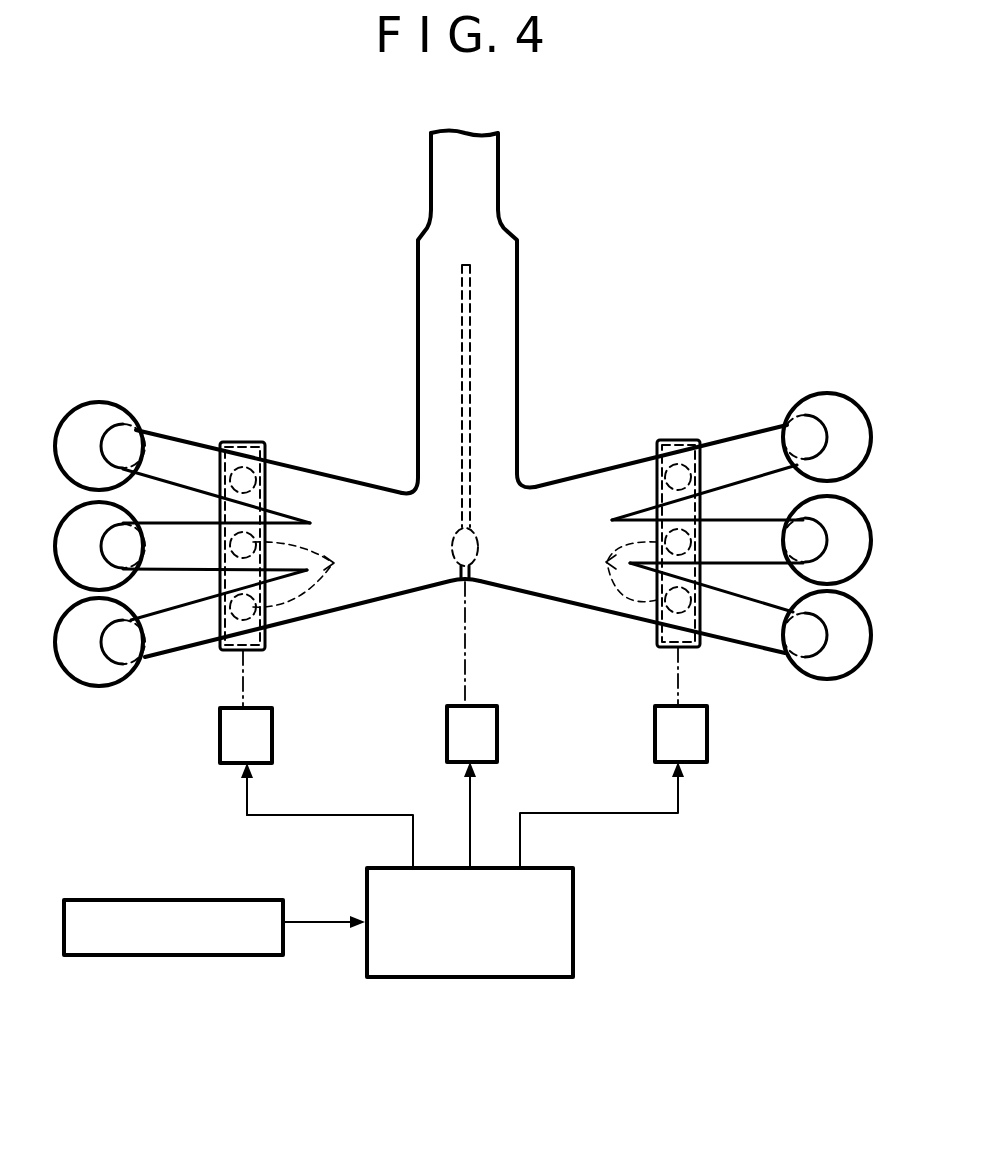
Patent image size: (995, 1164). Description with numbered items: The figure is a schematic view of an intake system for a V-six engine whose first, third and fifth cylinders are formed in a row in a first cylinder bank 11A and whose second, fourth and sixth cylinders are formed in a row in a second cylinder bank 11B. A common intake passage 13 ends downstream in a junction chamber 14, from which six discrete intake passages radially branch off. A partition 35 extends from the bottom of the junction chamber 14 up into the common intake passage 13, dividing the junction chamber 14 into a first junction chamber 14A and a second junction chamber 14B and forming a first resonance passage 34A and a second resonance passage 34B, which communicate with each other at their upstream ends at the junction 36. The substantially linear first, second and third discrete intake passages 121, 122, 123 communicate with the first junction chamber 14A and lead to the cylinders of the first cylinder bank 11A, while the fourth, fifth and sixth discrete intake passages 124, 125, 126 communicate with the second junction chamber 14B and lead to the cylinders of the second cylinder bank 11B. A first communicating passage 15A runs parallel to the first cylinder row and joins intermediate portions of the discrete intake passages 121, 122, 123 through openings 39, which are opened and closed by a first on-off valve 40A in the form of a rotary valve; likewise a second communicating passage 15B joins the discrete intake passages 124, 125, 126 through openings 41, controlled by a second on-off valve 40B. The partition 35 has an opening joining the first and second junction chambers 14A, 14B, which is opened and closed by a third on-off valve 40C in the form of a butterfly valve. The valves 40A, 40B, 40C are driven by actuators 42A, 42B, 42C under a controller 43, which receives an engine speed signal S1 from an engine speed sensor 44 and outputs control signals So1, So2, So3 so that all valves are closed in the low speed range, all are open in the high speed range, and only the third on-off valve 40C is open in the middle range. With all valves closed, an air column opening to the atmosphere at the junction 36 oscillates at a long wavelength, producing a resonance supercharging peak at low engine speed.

The common intake passage 13 is at (512, 208).
The junction of the first and second resonance passages 36 is at (474, 250).
The partition 35 is at (472, 334).
The first resonance passage 34A is at (436, 401).
The second resonance passage 34B is at (504, 393).
The junction chamber 14 is at (452, 478).
The first junction chamber 14A is at (420, 553).
The second junction chamber 14B is at (542, 560).
The third on-off valve 40C is at (472, 545).
The first cylinder bank 11A is at (133, 402).
The second cylinder bank 11B is at (810, 394).
The first communicating passage 15A is at (250, 440).
The second communicating passage 15B is at (680, 438).
The third discrete intake passage 123 is at (167, 470).
The second discrete intake passage 122 is at (192, 558).
The first discrete intake passage 121 is at (188, 637).
The sixth discrete intake passage 126 is at (775, 465).
The fifth discrete intake passage 125 is at (738, 552).
The fourth discrete intake passage 124 is at (745, 630).
The openings 39 is at (313, 574).
The openings 41 is at (616, 572).
The first on-off valve 40A is at (265, 633).
The second on-off valve 40B is at (657, 638).
The actuator 42A is at (268, 738).
The actuator 42B is at (700, 738).
The actuator 42C is at (490, 738).
The controller 43 is at (557, 868).
The engine speed sensor 44 is at (286, 942).
The control signal So1 is at (313, 815).
The control signal So2 is at (681, 793).
The control signal So3 is at (472, 818).
The engine speed signal S1 is at (306, 918).